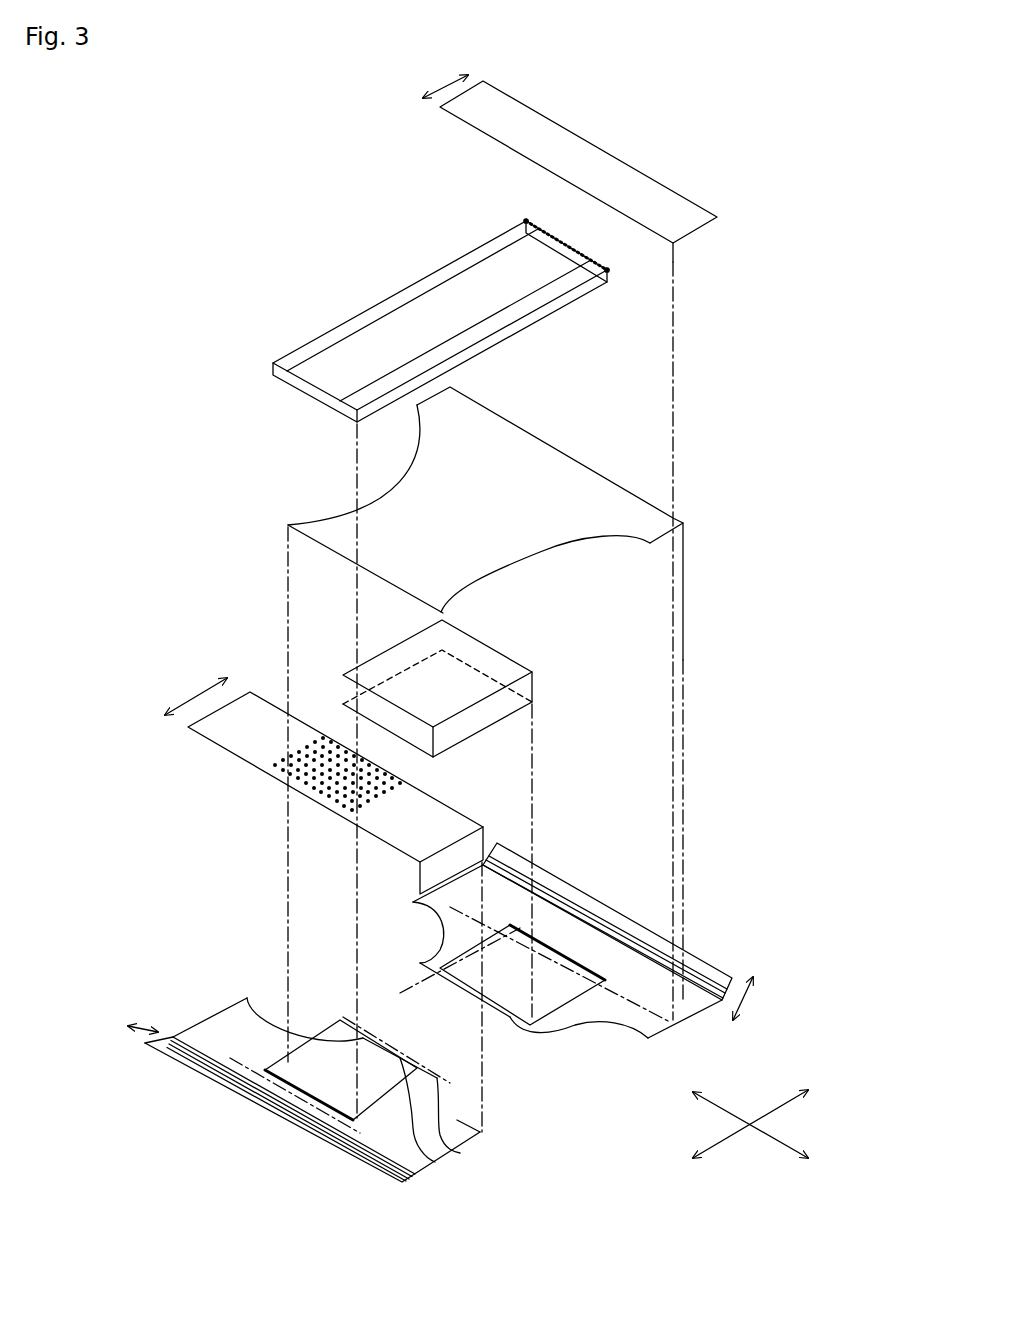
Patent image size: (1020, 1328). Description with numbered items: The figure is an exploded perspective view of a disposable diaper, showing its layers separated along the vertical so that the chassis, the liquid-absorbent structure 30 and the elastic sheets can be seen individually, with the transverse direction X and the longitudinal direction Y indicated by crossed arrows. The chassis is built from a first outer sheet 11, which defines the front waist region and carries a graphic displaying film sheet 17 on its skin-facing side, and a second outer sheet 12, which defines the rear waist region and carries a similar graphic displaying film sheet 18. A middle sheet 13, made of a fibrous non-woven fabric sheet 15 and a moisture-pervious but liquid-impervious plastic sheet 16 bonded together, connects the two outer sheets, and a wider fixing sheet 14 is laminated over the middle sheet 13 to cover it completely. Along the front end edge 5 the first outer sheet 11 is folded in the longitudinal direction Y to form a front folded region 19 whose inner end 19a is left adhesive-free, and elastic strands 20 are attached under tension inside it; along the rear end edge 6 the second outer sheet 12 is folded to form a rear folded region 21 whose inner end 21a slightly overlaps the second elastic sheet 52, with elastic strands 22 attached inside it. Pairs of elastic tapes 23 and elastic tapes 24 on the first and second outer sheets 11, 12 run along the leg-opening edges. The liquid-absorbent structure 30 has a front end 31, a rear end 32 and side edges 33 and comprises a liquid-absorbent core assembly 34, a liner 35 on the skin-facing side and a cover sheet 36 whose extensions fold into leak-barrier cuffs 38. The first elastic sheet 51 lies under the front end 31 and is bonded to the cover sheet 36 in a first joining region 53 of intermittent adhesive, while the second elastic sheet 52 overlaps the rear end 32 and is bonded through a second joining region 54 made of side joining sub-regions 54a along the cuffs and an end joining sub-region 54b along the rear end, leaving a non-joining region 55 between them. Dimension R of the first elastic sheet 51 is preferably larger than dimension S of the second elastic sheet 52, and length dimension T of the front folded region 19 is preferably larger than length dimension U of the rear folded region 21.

The front end edge 5 is at (285, 1107).
The rear end edge 6 is at (642, 950).
The first outer sheet 11 is at (290, 1078).
The second outer sheet 12 is at (550, 953).
The middle sheet 13 is at (483, 686).
The fixing sheet 14 is at (557, 463).
The fibrous non-woven fabric sheet 15 is at (460, 703).
The plastic sheet 16 is at (497, 663).
The graphic displaying film sheet 17 is at (330, 1093).
The graphic displaying film sheet 18 is at (550, 972).
The front folded region 19 is at (288, 1109).
The inner end of front folded region 19a is at (158, 1052).
The elastic strands 20 is at (255, 1086).
The rear folded region 21 is at (607, 910).
The inner end of rear folded region 21a is at (550, 872).
The elastic strands 22 is at (613, 945).
The elastic tapes 23 is at (237, 1013).
The elastic tapes 24 is at (433, 930).
The liquid-absorbent structure 30 is at (433, 317).
The front end 31 is at (275, 372).
The rear end 32 is at (568, 242).
The side edges 33 is at (372, 305).
The liquid-absorbent core assembly 34 is at (308, 390).
The liner 35 is at (330, 372).
The cover sheet 36 is at (350, 403).
The leak-barrier cuffs 38 is at (412, 290).
The first elastic sheet 51 is at (319, 793).
The second elastic sheet 52 is at (502, 103).
The first joining region 53 is at (380, 768).
The second joining region 54 is at (580, 250).
The side joining sub-regions 54a is at (520, 222).
The end joining sub-region 54b is at (548, 234).
The non-joining region 55 is at (530, 232).
The dimension of first elastic sheet R is at (195, 696).
The dimension of second elastic sheet S is at (431, 92).
The length dimension of front folded region T is at (134, 1026).
The length dimension of rear folded region U is at (750, 1002).
The transverse direction X is at (777, 1140).
The longitudinal direction Y is at (780, 1107).